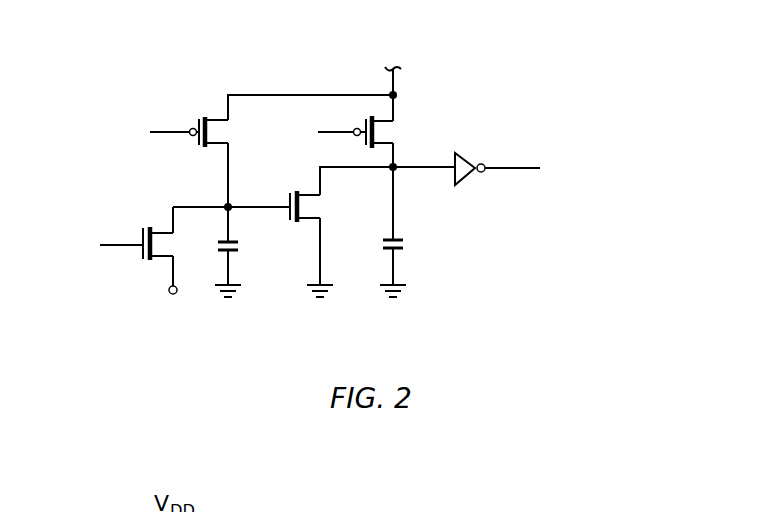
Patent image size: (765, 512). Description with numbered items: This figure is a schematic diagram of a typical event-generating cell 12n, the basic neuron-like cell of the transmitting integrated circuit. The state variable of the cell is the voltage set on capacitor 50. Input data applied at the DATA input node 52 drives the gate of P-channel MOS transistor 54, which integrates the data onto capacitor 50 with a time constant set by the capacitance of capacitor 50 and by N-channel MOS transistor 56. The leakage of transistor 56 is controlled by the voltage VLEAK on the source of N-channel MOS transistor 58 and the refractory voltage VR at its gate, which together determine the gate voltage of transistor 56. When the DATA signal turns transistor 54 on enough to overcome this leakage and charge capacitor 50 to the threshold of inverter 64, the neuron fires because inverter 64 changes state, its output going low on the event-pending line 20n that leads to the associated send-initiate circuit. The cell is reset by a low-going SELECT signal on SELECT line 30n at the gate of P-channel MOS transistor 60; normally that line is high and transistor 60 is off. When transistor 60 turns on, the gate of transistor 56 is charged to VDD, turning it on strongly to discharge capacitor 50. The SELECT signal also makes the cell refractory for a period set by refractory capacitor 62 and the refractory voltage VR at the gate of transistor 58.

The event-generating cell 12n is at (437, 315).
The P-channel MOS transistor 60 is at (199, 116).
The SELECT line 30n is at (172, 134).
The P-channel MOS transistor 54 is at (395, 133).
The DATA input node 52 is at (331, 134).
The N-channel MOS transistor 56 is at (319, 205).
The N-channel MOS transistor 58 is at (145, 226).
The refractory capacitor 62 is at (242, 245).
The capacitor 50 is at (406, 244).
The inverter 64 is at (463, 181).
The event-pending line 20n is at (517, 167).